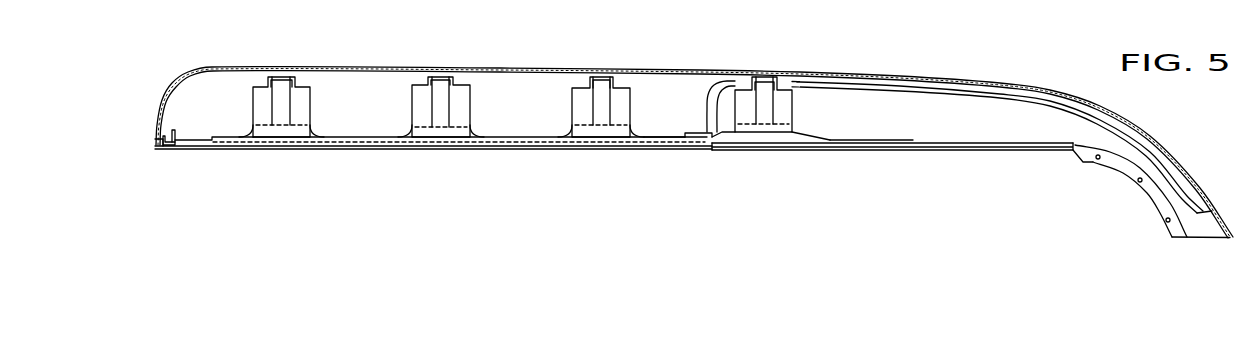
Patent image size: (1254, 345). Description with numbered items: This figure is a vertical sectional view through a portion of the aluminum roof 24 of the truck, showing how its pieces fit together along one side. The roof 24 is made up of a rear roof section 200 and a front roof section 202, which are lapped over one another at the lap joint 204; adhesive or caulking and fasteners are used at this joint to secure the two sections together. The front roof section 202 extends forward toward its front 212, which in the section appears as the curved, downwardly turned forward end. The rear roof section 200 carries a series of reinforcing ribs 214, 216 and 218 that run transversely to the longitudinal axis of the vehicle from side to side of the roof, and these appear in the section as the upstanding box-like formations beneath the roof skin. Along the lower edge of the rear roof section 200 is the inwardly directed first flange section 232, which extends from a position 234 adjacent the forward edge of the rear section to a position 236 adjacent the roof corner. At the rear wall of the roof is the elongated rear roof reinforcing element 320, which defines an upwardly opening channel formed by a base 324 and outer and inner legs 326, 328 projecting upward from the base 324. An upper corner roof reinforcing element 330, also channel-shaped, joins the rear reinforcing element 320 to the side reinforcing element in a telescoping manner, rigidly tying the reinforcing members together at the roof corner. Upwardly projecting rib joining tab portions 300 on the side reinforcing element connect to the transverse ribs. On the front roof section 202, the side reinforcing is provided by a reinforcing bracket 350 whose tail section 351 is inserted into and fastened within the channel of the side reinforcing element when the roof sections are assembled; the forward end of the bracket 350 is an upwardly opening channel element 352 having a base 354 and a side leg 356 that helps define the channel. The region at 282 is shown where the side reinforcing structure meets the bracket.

The roof 24 is at (579, 66).
The rear roof section 200 is at (492, 70).
The front roof section 202 is at (1043, 87).
The lap joint 204 is at (703, 112).
The front of roof section 212 is at (1222, 240).
The reinforcing rib 214 is at (578, 111).
The reinforcing rib 216 is at (418, 103).
The reinforcing rib 218 is at (302, 112).
The first flange section 232 is at (353, 149).
The position adjacent forward edge 234 is at (717, 152).
The position adjacent corner 236 is at (213, 147).
The plate joint 282 is at (713, 157).
The rib joining tab 300 is at (632, 128).
The rear roof reinforcing element 320 is at (154, 154).
The base 324 is at (168, 150).
The outer leg 326 is at (160, 140).
The inner leg 328 is at (173, 131).
The upper corner roof reinforcing element 330 is at (194, 145).
The reinforcing bracket 350 is at (802, 140).
The tail section 351 is at (660, 135).
The channel element 352 is at (950, 138).
The base 354 is at (953, 148).
The first side leg 356 is at (913, 140).